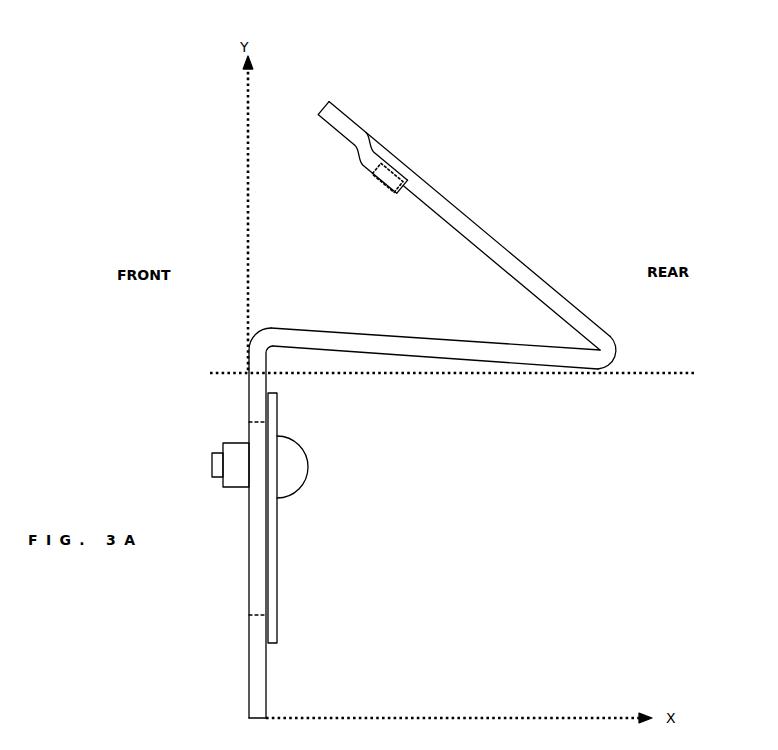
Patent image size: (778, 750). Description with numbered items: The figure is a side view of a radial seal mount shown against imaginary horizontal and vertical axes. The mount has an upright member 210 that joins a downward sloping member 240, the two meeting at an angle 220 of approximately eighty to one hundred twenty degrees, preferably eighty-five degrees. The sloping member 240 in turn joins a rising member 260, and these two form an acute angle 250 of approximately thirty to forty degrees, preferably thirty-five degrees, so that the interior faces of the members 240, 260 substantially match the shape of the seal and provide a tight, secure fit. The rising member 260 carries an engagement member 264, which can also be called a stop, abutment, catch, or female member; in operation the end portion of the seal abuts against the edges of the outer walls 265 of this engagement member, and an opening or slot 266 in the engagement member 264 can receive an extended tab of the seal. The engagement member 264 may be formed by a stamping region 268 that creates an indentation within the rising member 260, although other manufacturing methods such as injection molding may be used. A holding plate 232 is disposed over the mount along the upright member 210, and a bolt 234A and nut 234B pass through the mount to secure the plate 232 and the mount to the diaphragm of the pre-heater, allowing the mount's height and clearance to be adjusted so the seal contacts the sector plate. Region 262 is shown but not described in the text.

The upright member 210 is at (248, 422).
The angle 220 is at (303, 352).
The holding plate 232 is at (277, 549).
The bolt 234A is at (304, 463).
The nut 234B is at (232, 456).
The downward sloping member 240 is at (410, 357).
The acute angle 250 is at (510, 277).
The rising member 260 is at (468, 211).
The strap portion 262 is at (349, 97).
The engagement member 264 is at (375, 187).
The outer walls 265 is at (396, 194).
The slot 266 is at (417, 200).
The stamping region 268 is at (398, 160).